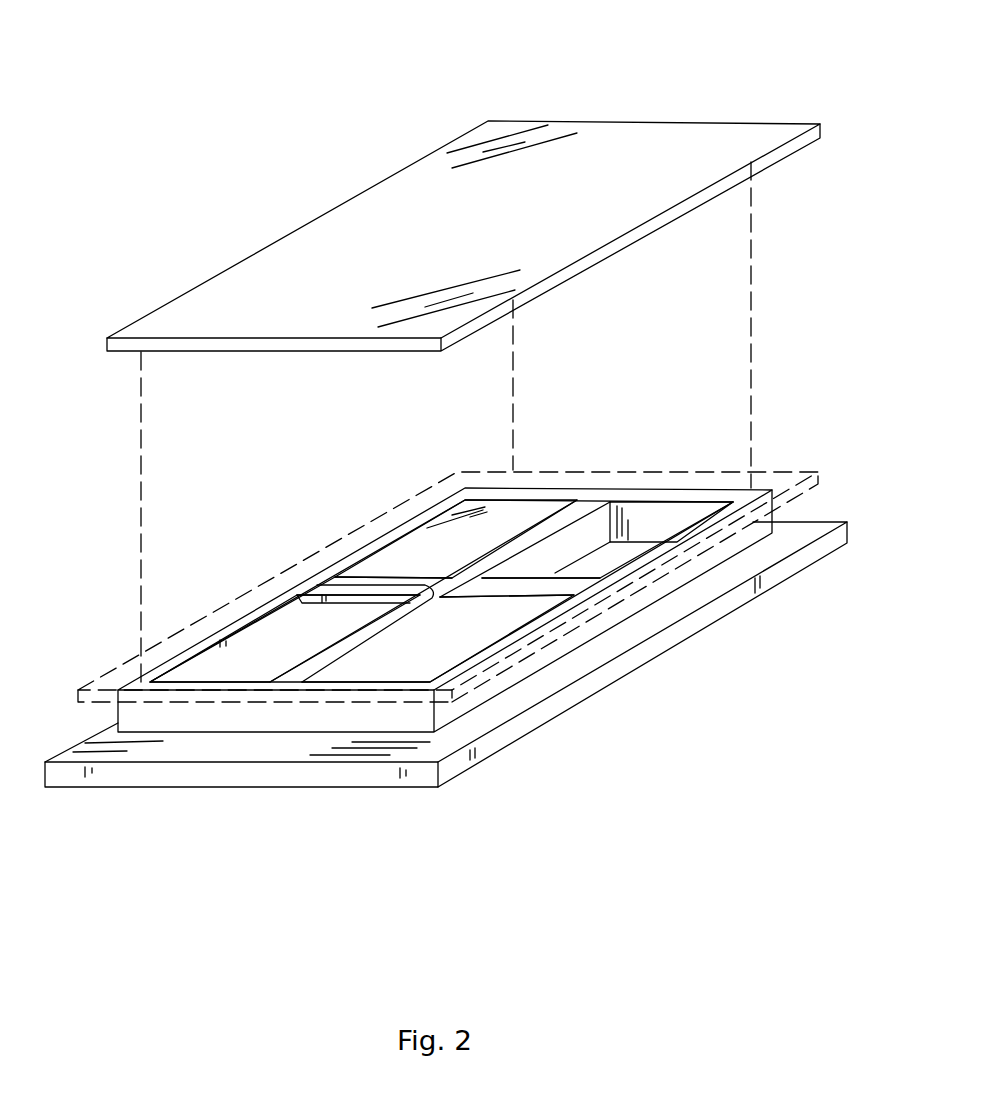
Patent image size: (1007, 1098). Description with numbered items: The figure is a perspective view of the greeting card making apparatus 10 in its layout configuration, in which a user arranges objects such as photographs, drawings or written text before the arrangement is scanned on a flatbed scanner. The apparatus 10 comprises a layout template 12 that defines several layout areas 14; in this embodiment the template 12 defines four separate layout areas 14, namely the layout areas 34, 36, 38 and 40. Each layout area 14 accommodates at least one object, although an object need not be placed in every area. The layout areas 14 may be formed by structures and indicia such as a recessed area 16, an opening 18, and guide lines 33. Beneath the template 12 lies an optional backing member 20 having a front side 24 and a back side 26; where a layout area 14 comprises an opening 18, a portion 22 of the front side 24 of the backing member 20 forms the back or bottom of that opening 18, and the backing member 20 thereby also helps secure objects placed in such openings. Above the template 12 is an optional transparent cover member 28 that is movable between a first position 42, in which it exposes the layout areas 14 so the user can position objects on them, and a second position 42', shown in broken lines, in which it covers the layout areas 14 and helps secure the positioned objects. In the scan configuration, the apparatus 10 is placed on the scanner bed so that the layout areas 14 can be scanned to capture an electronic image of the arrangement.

The greeting card making apparatus 10 is at (190, 72).
The layout template 12 is at (287, 585).
The layout areas 14 is at (633, 500).
The recessed area 16 is at (287, 660).
The opening 18 is at (658, 502).
The backing member 20 is at (528, 732).
The portion of the front side of the backing member 22 is at (615, 557).
The front side 24 is at (193, 748).
The back side 26 is at (307, 787).
The transparent cover member 28 is at (457, 251).
The guide lines 33 is at (358, 556).
The layout area 34 is at (520, 531).
The layout area 36 is at (707, 502).
The layout area 38 is at (262, 613).
The layout area 40 is at (377, 673).
The first position 42 is at (463, 383).
The second position 42' is at (455, 558).